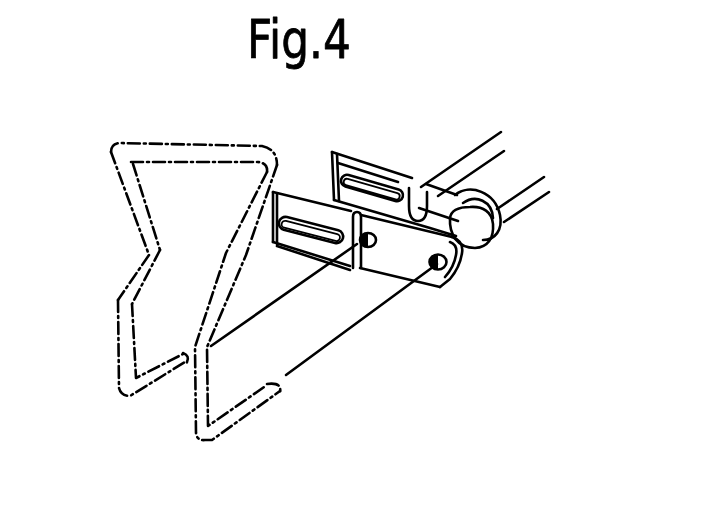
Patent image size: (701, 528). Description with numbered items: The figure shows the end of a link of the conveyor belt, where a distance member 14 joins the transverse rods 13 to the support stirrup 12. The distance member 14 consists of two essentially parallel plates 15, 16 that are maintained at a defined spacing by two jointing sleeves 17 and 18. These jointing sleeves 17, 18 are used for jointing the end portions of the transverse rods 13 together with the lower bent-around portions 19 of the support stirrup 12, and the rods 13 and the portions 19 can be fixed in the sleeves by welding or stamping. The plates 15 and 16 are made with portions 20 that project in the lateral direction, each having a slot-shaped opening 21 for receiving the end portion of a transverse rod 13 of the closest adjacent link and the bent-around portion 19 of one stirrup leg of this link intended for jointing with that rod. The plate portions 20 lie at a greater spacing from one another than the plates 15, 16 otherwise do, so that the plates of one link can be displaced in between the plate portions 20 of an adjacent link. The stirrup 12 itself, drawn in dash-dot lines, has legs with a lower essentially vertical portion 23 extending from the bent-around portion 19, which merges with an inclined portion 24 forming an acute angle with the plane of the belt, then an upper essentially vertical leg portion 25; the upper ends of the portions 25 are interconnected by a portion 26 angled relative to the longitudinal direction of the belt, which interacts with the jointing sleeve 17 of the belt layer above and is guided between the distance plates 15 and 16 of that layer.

The support stirrup 12 is at (172, 260).
The transverse rod 13 is at (473, 153).
The distance member 14 is at (509, 239).
The plate 15 is at (387, 262).
The plate 16 is at (511, 221).
The jointing sleeve 17 is at (461, 246).
The jointing sleeve 18 is at (412, 207).
The bent-around portion 19 is at (153, 371).
The plate portion 20 is at (342, 152).
The slot-shaped opening 21 is at (311, 251).
The vertical portion 23 is at (122, 330).
The inclined portion 24 is at (138, 282).
The upper vertical leg portion 25 is at (132, 200).
The angled portion 26 is at (177, 152).